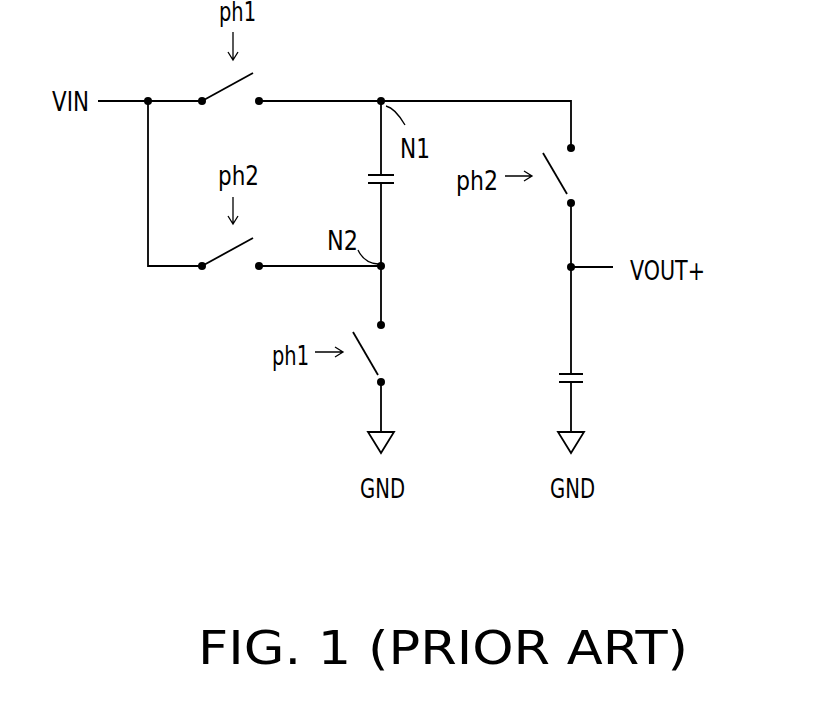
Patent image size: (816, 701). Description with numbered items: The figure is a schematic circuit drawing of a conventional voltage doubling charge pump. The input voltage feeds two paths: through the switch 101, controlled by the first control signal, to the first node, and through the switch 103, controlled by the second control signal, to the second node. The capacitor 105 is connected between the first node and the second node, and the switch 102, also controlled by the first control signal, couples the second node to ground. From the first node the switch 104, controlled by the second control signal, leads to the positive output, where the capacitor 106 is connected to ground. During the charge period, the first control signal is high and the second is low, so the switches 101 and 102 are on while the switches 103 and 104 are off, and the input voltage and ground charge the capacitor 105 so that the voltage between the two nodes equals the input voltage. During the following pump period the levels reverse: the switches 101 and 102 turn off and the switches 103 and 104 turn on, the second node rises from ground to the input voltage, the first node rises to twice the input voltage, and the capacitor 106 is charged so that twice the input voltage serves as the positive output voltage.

The switch 101 is at (204, 92).
The switch 102 is at (391, 345).
The switch 103 is at (220, 273).
The switch 104 is at (578, 176).
The capacitor 105 is at (368, 176).
The capacitor 106 is at (577, 372).